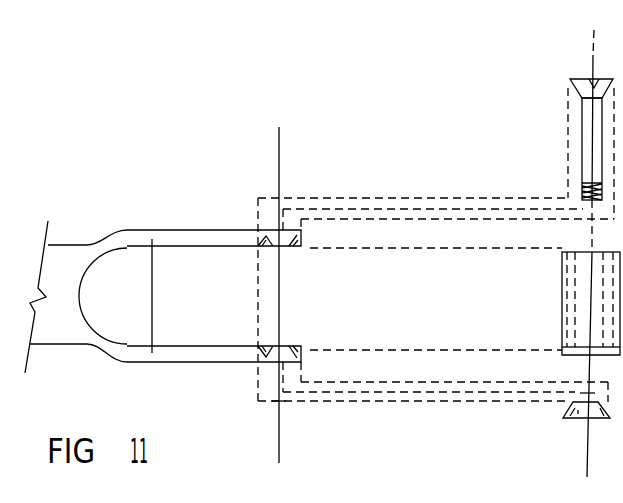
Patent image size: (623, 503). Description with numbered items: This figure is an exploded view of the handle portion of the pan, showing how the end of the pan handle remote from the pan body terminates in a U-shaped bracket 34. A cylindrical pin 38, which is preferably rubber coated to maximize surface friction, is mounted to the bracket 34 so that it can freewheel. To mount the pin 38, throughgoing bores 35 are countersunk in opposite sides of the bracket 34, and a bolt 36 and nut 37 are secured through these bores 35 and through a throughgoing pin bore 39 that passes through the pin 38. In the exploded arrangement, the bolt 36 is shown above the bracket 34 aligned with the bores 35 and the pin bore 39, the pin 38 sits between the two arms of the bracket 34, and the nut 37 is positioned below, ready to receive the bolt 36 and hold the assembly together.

The U-shaped bracket 34 is at (152, 262).
The throughgoing bores 35 is at (258, 246).
The bolt 36 is at (588, 142).
The nut 37 is at (610, 410).
The cylindrical pin 38 is at (605, 311).
The pin bore 39 is at (579, 327).